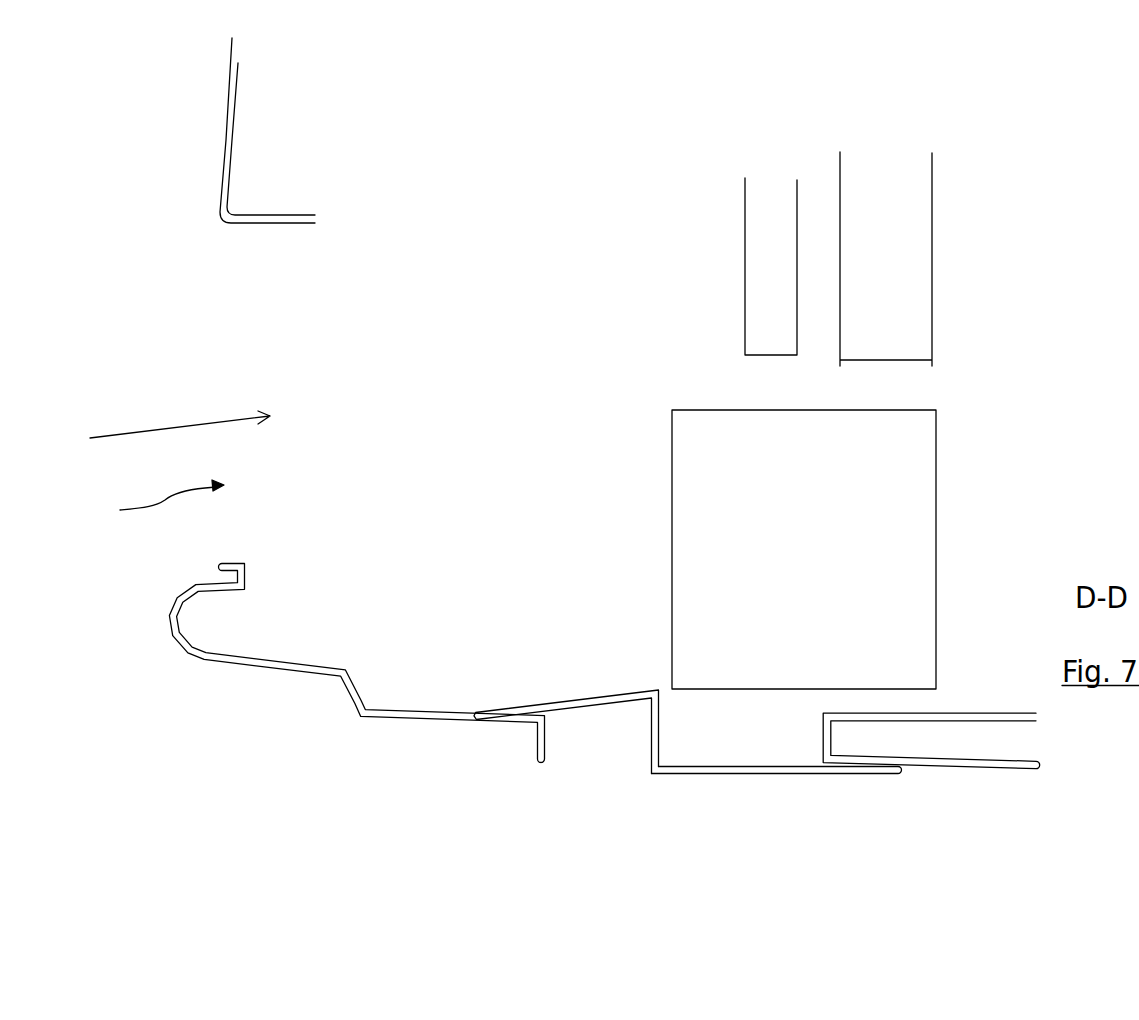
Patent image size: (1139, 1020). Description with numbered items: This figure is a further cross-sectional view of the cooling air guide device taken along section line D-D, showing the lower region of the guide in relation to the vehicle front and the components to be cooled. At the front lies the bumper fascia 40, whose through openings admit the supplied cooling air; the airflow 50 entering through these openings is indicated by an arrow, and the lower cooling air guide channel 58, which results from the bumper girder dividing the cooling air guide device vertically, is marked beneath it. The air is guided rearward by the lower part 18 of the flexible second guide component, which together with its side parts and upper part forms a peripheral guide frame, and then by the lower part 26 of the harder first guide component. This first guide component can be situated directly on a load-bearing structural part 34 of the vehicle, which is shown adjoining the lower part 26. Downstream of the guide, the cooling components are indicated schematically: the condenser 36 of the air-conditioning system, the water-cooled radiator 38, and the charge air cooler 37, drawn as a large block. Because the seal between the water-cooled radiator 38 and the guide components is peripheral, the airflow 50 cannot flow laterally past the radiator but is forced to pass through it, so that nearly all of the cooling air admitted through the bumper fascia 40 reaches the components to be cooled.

The lower part 18 is at (577, 703).
The lower part 26 is at (740, 770).
The load-bearing structural part 34 is at (938, 755).
The condenser 36 is at (750, 298).
The charge air cooler 37 is at (905, 462).
The water-cooled radiator 38 is at (927, 204).
The bumper fascia 40 is at (227, 132).
The airflow 50 is at (188, 423).
The lower cooling air guide channel 58 is at (151, 501).